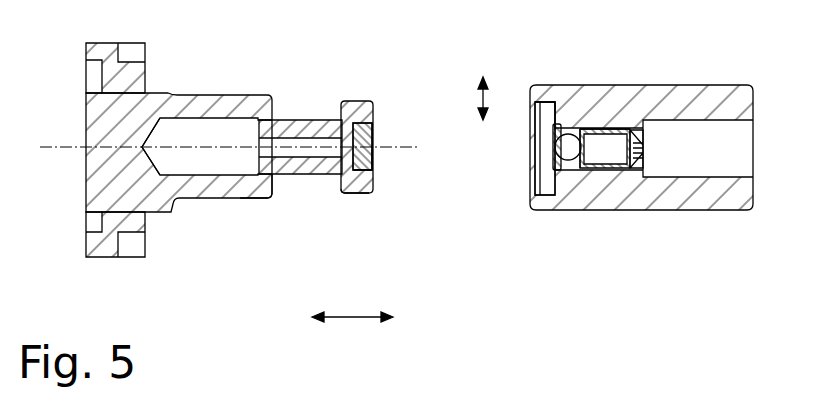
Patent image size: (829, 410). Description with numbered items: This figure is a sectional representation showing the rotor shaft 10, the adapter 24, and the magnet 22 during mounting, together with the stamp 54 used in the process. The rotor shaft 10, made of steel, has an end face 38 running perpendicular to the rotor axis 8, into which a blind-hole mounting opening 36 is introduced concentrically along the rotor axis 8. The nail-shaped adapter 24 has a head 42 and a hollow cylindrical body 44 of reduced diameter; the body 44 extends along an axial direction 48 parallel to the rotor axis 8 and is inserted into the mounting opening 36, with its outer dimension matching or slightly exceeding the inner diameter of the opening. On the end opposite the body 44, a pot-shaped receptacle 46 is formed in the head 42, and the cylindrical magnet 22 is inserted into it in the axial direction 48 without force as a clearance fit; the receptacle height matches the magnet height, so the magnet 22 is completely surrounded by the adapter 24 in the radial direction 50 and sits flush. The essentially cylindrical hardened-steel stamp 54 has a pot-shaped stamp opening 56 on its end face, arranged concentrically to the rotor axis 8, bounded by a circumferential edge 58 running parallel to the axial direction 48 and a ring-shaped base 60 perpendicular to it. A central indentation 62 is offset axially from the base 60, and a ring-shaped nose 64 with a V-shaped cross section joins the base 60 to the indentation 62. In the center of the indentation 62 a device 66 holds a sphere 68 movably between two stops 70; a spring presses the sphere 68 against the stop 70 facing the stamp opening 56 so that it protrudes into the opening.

The rotor axis 8 is at (402, 152).
The rotor shaft 10 is at (190, 107).
The magnet 22 is at (366, 167).
The adapter 24 is at (360, 194).
The mounting opening 36 is at (199, 176).
The end face 38 is at (272, 196).
The head 42 is at (360, 108).
The body 44 is at (297, 117).
The receptacle 46 is at (366, 126).
The axial direction 48 is at (353, 318).
The radial direction 50 is at (487, 98).
The stamp 54 is at (714, 100).
The stamp opening 56 is at (546, 190).
The edge 58 is at (555, 102).
The base 60 is at (559, 120).
The indentation 62 is at (568, 174).
The nose 64 is at (556, 174).
The device 66 is at (620, 127).
The sphere 68 is at (566, 147).
The stops 70 is at (558, 172).